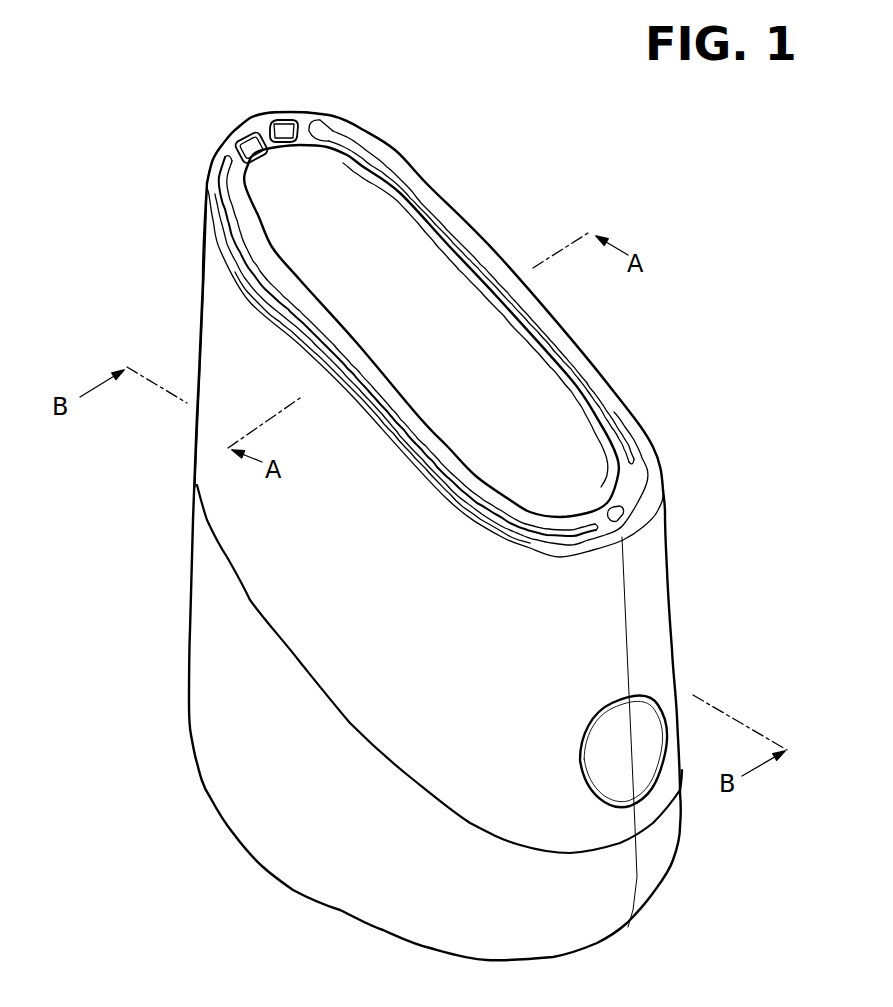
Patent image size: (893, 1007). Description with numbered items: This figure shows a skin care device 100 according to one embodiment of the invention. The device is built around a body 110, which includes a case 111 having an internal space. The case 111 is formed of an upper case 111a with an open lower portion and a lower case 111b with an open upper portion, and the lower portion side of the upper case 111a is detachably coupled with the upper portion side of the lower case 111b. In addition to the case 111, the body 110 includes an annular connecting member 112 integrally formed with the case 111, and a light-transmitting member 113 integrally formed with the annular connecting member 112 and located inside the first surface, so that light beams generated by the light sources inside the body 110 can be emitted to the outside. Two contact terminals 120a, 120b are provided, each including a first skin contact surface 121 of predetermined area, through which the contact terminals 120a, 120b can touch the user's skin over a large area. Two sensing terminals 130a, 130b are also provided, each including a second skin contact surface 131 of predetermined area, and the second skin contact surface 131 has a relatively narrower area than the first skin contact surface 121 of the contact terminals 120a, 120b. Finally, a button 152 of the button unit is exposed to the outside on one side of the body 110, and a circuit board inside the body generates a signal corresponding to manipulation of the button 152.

The skin care device 100 is at (447, 53).
The body 110 is at (678, 628).
The case 111 is at (80, 530).
The upper case 111a is at (227, 522).
The lower case 111b is at (213, 600).
The annular connecting member 112 is at (306, 117).
The light-transmitting member 113 is at (520, 357).
The contact terminal 120a is at (443, 193).
The contact terminal 120b is at (244, 233).
The first skin contact surface 121 is at (283, 280).
The sensing terminal 130a is at (280, 118).
The sensing terminal 130b is at (242, 138).
The second skin contact surface 131 is at (282, 122).
The button 152 is at (617, 783).